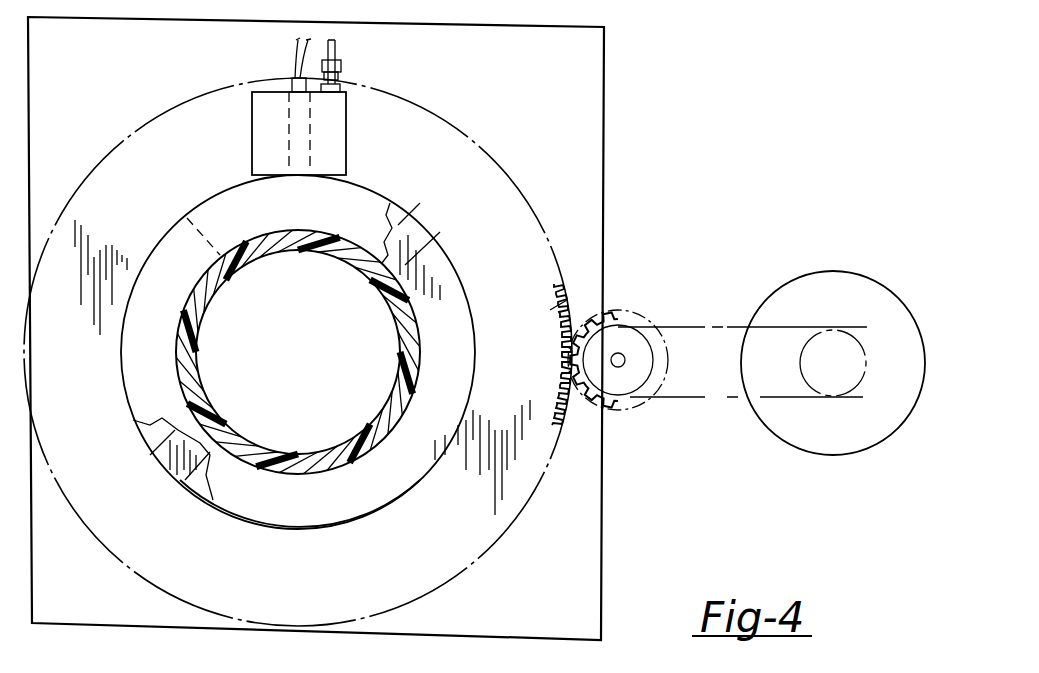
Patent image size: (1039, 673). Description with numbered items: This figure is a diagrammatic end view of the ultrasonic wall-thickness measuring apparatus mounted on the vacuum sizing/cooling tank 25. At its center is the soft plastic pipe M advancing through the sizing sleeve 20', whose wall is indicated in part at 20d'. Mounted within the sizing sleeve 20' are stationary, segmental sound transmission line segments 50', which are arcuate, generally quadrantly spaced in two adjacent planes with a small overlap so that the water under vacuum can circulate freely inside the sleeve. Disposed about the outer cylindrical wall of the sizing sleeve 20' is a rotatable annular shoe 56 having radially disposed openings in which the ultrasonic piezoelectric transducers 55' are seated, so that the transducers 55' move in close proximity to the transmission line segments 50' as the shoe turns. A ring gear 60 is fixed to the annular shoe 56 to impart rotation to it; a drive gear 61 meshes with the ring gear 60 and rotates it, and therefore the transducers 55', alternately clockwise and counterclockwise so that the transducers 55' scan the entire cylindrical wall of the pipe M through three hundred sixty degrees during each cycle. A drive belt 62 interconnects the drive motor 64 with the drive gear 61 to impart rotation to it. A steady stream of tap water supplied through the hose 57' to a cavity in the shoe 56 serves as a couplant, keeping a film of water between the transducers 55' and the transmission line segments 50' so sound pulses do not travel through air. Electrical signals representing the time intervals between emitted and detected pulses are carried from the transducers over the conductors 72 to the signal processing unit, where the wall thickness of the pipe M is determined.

The vacuum sizing/cooling tank 25 is at (606, 140).
The sizing sleeve 20' is at (298, 352).
The wheel ring body 20d' is at (300, 530).
The soft plastic pipe M is at (277, 253).
The sound transmission line segments 50' is at (303, 358).
The annular shoe 56 is at (348, 157).
The transducers 55' is at (249, 132).
The conductors 72 is at (297, 42).
The hose 57' is at (364, 64).
The ring gear 60 is at (567, 290).
The drive gear 61 is at (608, 315).
The drive belt 62 is at (682, 397).
The drive motor 64 is at (838, 268).